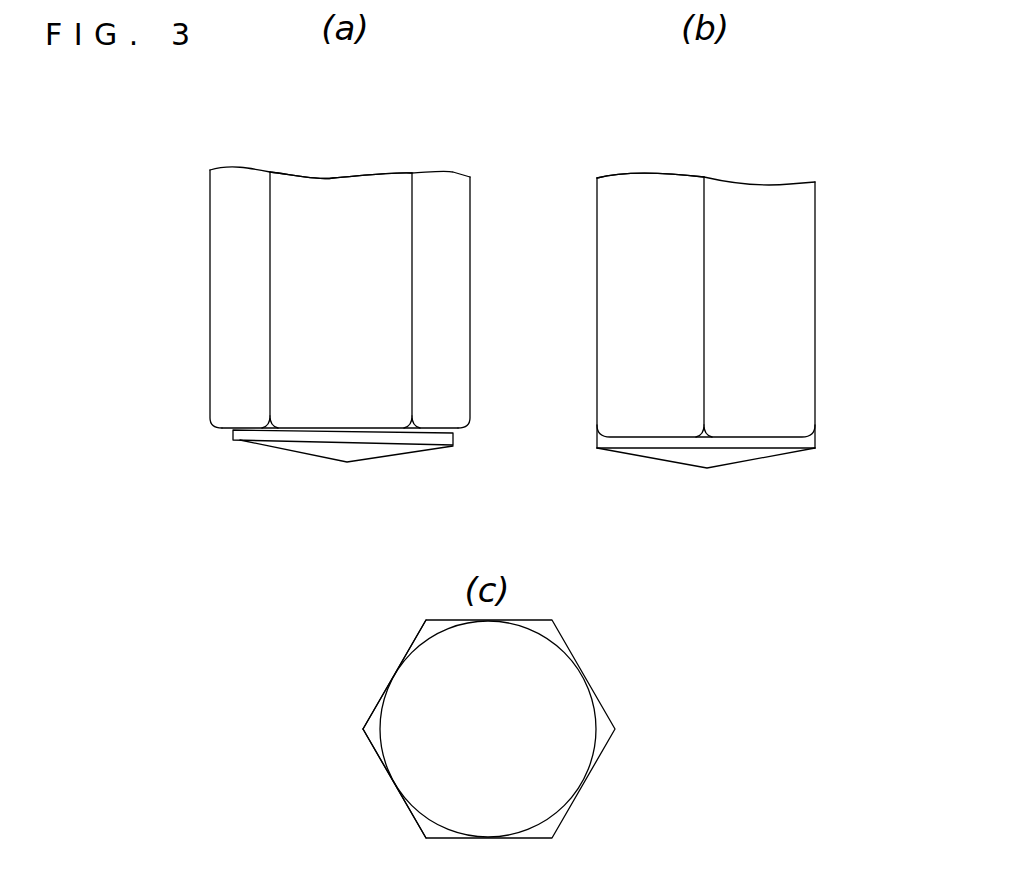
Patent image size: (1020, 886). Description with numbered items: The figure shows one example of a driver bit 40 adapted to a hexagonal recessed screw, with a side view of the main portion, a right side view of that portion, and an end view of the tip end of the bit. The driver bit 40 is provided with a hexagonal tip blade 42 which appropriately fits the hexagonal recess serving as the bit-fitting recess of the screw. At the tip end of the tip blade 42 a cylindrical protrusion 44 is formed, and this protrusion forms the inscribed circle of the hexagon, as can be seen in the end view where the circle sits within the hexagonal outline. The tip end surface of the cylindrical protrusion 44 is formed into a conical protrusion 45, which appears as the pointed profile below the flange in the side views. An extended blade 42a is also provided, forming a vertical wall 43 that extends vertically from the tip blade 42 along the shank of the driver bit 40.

The driver bit 40 is at (479, 186).
The hexagonal tip blade 42 is at (237, 408).
The extended blade 42a is at (234, 237).
The vertical wall 43 is at (359, 207).
The cylindrical protrusion 44 is at (235, 433).
The conical protrusion 45 is at (333, 450).